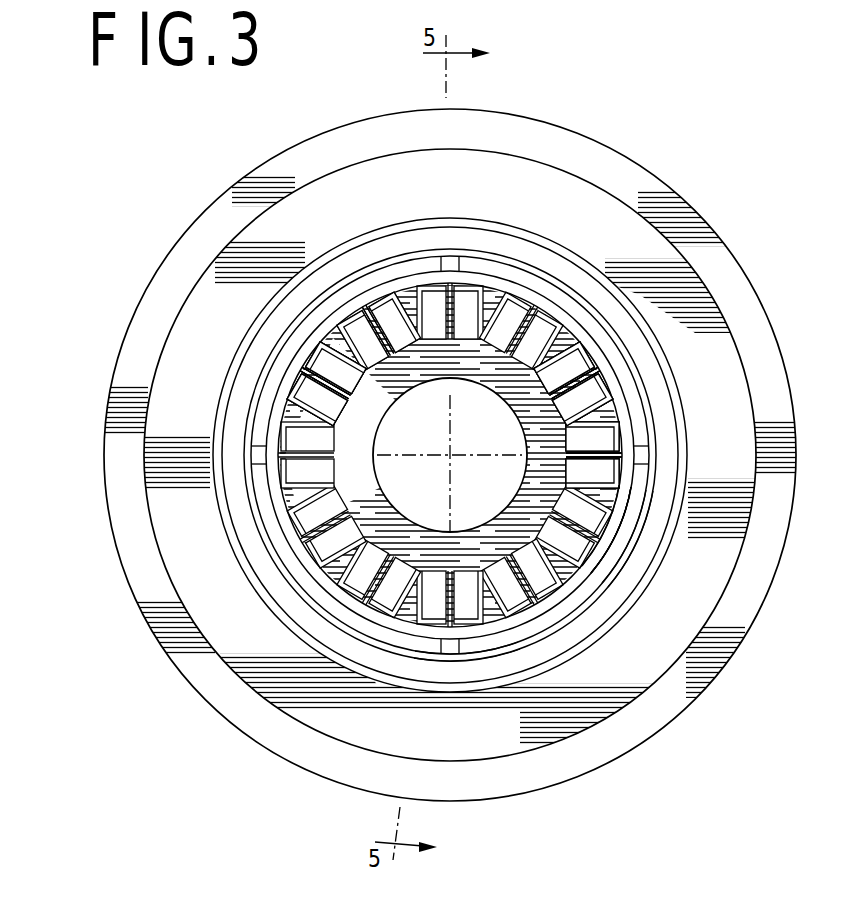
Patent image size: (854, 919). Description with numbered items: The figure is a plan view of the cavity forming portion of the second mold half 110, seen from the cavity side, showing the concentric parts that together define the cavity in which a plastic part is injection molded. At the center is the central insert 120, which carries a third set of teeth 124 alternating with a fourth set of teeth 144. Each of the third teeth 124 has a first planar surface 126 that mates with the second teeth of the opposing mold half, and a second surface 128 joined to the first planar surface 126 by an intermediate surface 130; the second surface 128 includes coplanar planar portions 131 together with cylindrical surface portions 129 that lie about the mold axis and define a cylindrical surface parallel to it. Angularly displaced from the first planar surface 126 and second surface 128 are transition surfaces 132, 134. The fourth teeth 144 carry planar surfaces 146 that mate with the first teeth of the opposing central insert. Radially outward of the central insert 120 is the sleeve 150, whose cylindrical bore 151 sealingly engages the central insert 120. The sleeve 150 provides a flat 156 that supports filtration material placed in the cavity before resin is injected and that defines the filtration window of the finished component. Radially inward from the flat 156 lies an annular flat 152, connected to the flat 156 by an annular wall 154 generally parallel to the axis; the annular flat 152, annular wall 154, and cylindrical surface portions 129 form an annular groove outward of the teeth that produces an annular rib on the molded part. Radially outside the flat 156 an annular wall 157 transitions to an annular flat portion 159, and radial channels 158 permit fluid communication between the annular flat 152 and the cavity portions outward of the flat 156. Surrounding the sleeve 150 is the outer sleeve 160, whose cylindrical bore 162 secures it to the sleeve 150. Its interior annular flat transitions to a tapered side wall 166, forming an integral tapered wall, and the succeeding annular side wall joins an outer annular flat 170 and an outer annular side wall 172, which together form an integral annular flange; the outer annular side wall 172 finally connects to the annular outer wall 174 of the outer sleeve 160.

The second mold half 110 is at (688, 124).
The central insert 120 is at (462, 561).
The third set of teeth 124 is at (603, 397).
The first planar surface 126 is at (605, 417).
The second surface 128 is at (591, 394).
The cylindrical surface portions 129 is at (345, 530).
The intermediate surface 130 is at (325, 520).
The planar portions 131 is at (305, 520).
The transition surface 132 is at (578, 395).
The transition surface 134 is at (608, 440).
The fourth set of teeth 144 is at (584, 356).
The planar surfaces 146 is at (612, 435).
The sleeve 150 is at (618, 539).
The cylindrical bore 151 is at (638, 505).
The annular flat 152 is at (598, 557).
The annular wall 154 is at (583, 571).
The flat 156 is at (615, 556).
The annular wall 157 is at (500, 647).
The radial channels 158 is at (580, 586).
The annular flat portion 159 is at (519, 650).
The outer sleeve 160 is at (190, 360).
The cylindrical bore 162 is at (277, 348).
The tapered side wall 166 is at (290, 311).
The outer annular flat 170 is at (318, 262).
The outer annular side wall 172 is at (334, 262).
The annular outer wall 174 is at (323, 192).